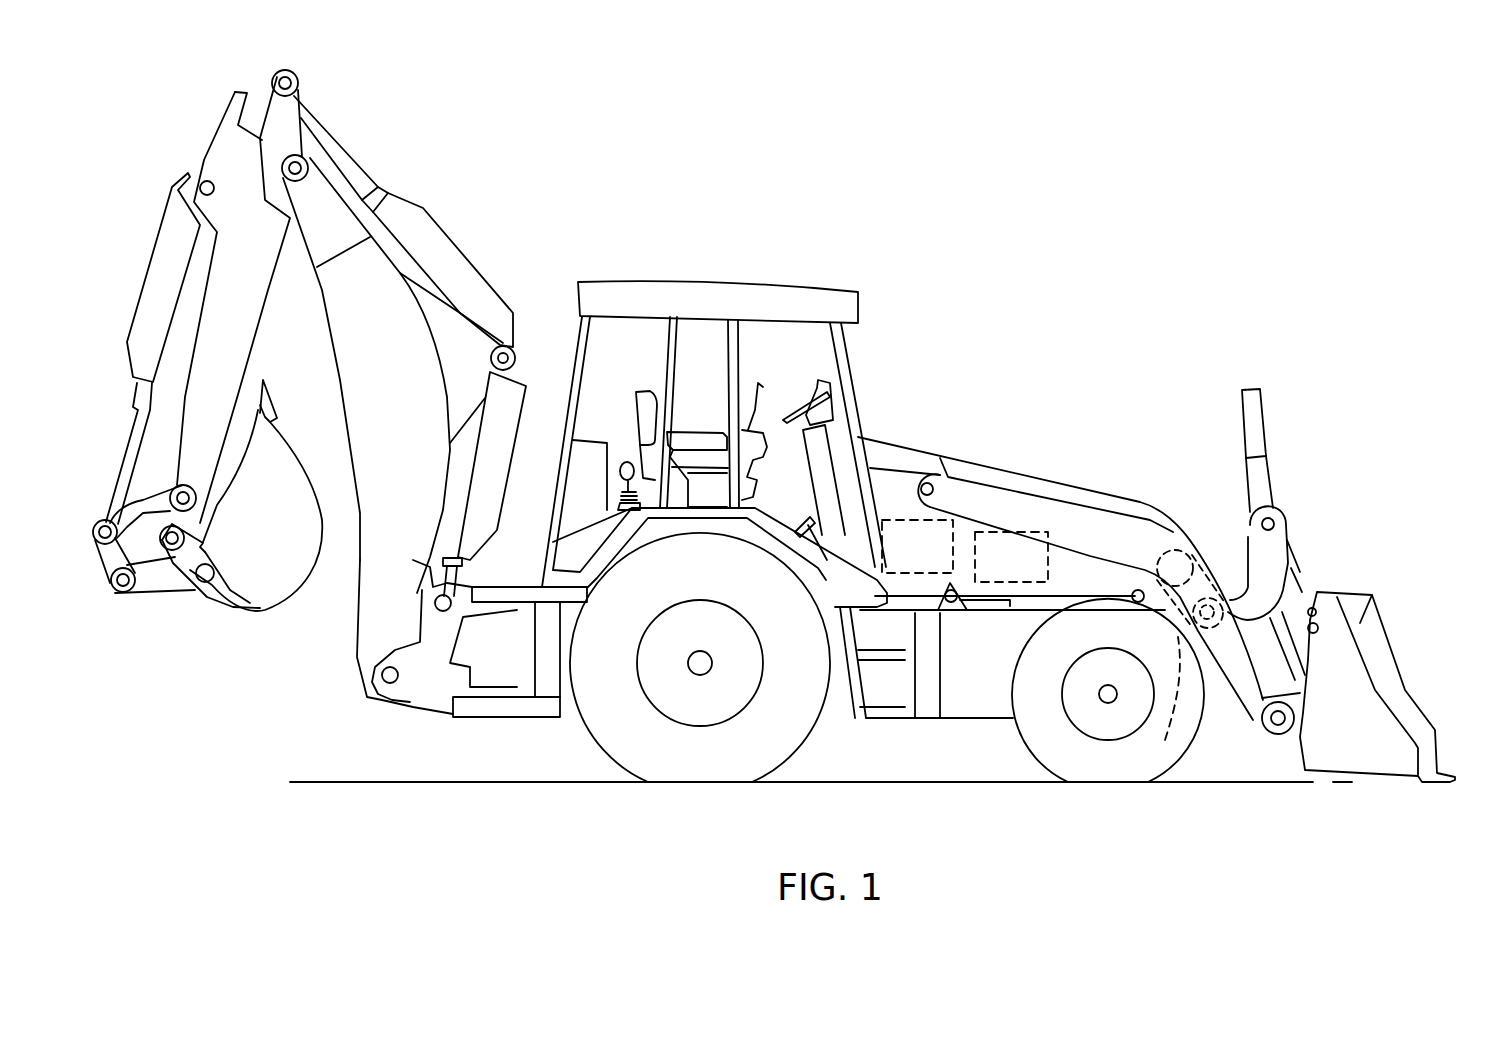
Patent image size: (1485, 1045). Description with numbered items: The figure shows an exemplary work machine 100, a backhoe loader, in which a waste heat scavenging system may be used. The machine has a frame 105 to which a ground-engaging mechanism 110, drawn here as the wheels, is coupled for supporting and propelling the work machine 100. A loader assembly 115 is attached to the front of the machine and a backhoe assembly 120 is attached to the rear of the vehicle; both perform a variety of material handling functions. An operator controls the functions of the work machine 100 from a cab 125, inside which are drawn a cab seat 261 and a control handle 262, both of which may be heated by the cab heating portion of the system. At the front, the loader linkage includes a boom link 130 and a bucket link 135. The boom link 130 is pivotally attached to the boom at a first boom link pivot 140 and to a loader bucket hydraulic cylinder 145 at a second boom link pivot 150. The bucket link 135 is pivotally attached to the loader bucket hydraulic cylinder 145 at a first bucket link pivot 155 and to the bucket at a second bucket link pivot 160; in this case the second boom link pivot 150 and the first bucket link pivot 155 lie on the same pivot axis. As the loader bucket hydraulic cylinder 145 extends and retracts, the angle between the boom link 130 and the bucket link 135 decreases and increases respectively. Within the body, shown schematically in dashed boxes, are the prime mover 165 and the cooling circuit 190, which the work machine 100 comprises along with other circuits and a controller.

The work machine 100 is at (1143, 154).
The frame 105 is at (1005, 676).
The ground-engaging mechanism 110 is at (647, 741).
The loader assembly 115 is at (1156, 571).
The backhoe assembly 120 is at (463, 136).
The cab 125 is at (862, 390).
The boom link 130 is at (1262, 568).
The bucket link 135 is at (1290, 568).
The first boom link pivot 140 is at (1152, 703).
The loader bucket hydraulic cylinder 145 is at (1238, 410).
The second boom link pivot 150 is at (1264, 518).
The first bucket link pivot 155 is at (1208, 613).
The second bucket link pivot 160 is at (1285, 607).
The prime mover 165 is at (1036, 573).
The cooling circuit 190 is at (943, 562).
The cab seat 261 is at (634, 388).
The control handle 262 is at (758, 405).